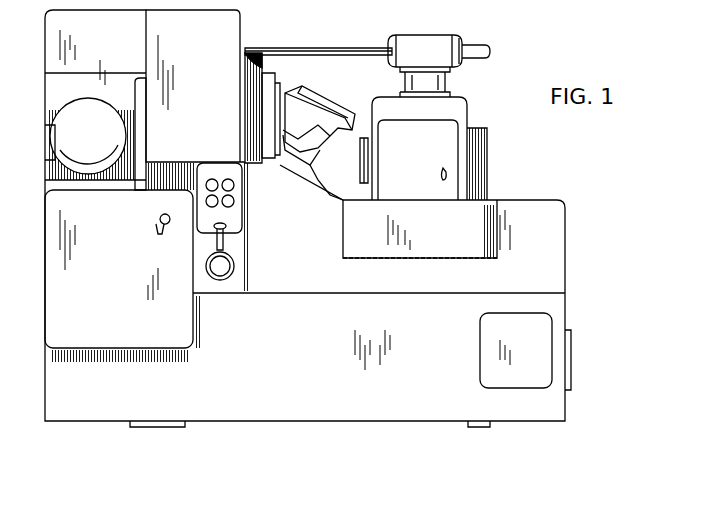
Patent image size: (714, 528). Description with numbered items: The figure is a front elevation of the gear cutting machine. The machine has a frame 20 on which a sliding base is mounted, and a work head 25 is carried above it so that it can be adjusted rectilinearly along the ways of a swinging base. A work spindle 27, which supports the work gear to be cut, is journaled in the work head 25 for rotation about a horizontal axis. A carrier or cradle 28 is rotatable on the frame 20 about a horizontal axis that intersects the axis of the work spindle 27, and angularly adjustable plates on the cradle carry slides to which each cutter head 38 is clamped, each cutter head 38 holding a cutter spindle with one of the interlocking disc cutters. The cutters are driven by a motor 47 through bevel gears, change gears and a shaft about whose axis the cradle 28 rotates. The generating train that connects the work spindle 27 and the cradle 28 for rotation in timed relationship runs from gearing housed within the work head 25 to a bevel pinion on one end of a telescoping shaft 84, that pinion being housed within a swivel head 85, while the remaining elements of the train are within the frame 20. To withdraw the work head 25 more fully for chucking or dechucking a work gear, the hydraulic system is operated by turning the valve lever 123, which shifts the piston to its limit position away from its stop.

The frame 20 is at (418, 369).
The motor 47 is at (100, 137).
The valve lever 123 is at (222, 236).
The carrier or cradle 28 is at (265, 62).
The telescoping shaft 84 is at (335, 49).
The swivel head 85 is at (418, 45).
The work head 25 is at (455, 110).
The cutter head 38 is at (315, 112).
The work spindle 27 is at (360, 160).